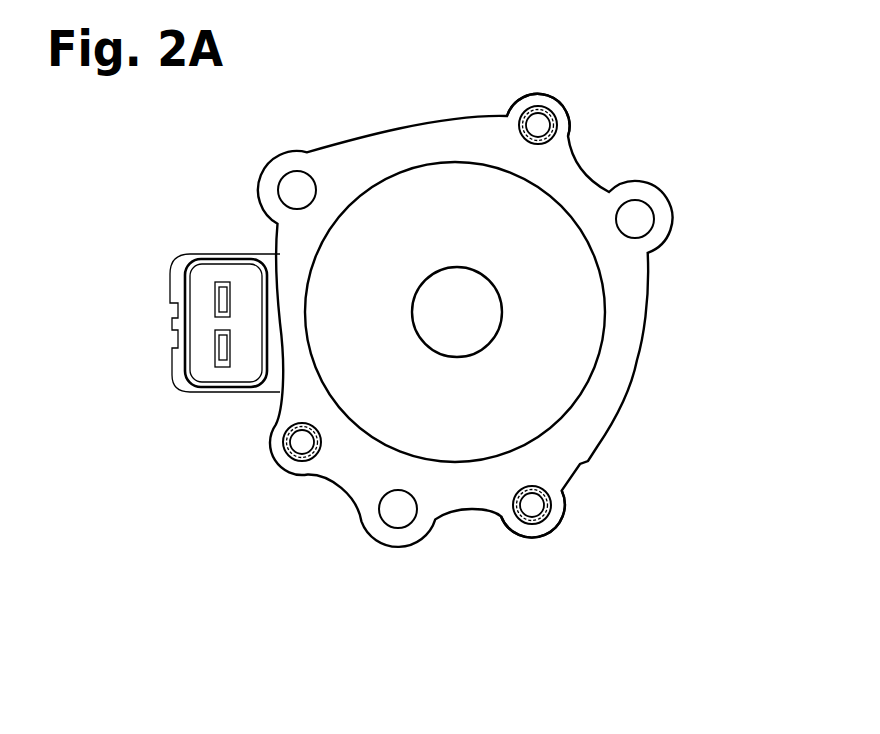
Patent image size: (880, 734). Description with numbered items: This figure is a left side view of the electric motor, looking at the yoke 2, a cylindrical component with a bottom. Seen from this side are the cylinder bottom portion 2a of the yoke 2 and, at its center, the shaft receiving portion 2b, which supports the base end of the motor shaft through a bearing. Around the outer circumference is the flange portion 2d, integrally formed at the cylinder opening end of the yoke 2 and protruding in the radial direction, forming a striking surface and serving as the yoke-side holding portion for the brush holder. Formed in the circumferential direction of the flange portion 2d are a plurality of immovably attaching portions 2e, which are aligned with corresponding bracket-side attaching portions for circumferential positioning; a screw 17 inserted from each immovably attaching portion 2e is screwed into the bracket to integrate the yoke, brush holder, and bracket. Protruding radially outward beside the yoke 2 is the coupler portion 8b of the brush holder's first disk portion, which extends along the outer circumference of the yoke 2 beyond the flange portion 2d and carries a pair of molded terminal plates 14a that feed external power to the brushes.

The yoke 2 is at (513, 328).
The cylinder bottom portion 2a is at (547, 383).
The shaft receiving portion 2b is at (459, 326).
The flange portion 2d is at (630, 310).
The immovably attaching portions 2e is at (510, 108).
The screw 17 is at (540, 122).
The coupler portion 8b is at (176, 267).
The terminal plates 14a is at (217, 302).